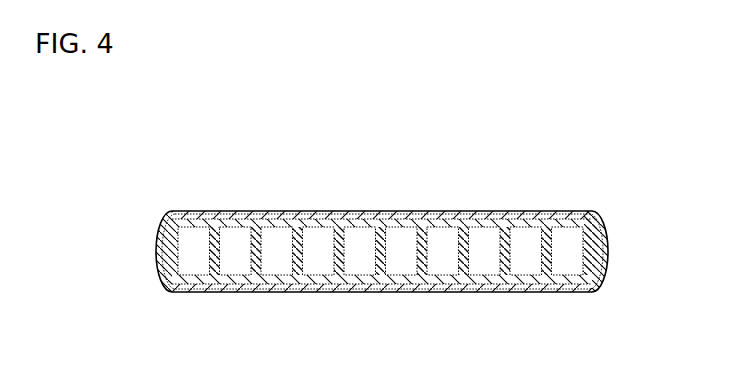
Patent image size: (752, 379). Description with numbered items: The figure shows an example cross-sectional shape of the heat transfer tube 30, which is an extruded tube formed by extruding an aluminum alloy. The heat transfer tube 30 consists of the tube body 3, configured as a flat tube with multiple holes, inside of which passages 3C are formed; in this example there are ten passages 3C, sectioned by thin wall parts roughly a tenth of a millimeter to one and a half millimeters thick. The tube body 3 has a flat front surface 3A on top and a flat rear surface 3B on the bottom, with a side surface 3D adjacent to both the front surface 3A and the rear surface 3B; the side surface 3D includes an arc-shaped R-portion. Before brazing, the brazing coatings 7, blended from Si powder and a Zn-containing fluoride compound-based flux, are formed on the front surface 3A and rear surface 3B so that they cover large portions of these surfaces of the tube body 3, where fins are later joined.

The heat transfer tube 30 is at (568, 162).
The tube body 3 is at (359, 213).
The front surface 3A is at (494, 213).
The rear surface 3B is at (315, 292).
The passage 3C is at (228, 267).
The side surface 3D is at (609, 250).
The brazing coating 7 is at (280, 212).